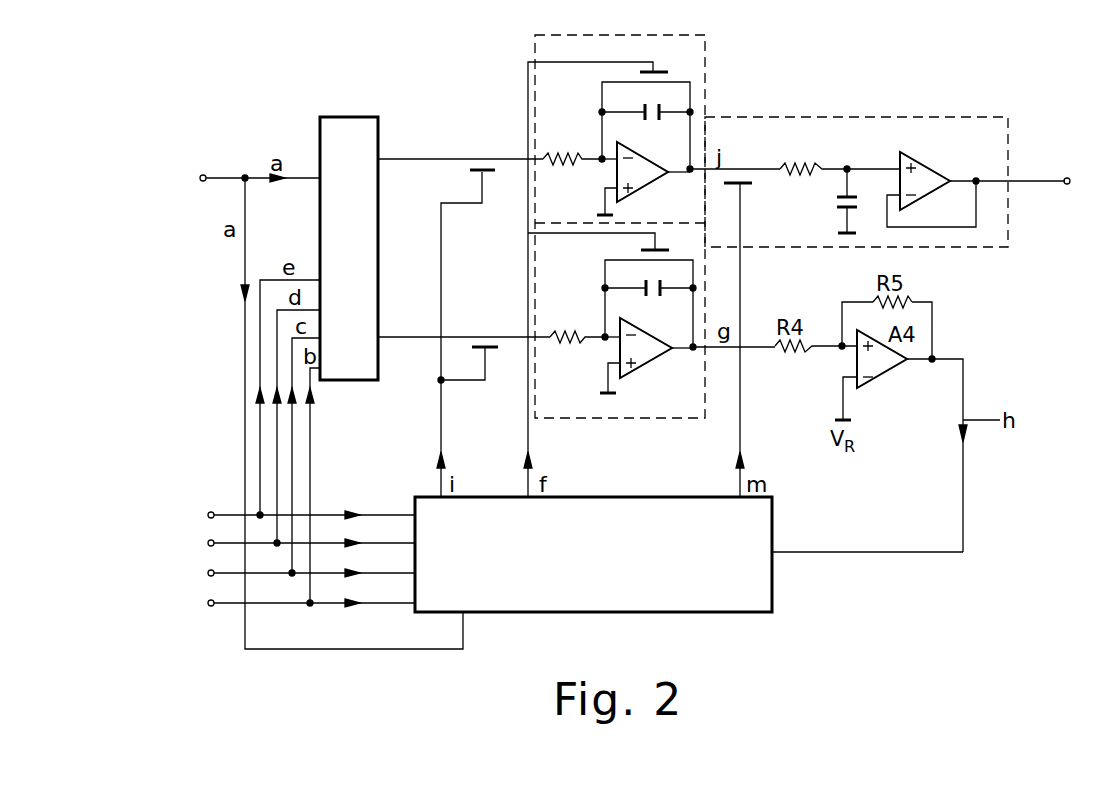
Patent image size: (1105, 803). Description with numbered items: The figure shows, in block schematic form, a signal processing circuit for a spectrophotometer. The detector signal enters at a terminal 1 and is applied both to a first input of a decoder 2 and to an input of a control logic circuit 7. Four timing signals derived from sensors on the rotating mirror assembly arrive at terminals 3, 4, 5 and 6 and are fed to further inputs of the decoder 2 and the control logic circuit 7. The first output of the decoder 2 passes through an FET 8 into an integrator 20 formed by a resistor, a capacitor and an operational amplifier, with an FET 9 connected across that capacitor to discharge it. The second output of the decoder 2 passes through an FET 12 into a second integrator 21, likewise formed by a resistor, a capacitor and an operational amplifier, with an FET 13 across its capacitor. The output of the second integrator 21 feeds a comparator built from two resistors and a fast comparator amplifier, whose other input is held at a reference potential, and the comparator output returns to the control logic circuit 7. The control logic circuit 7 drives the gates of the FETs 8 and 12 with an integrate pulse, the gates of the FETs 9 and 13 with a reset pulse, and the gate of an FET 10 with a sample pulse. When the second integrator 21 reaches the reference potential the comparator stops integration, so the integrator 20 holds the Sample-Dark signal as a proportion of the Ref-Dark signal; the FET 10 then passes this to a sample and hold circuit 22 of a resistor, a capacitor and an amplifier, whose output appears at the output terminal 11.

The terminal 1 is at (251, 177).
The decoder 2 is at (355, 117).
The terminal 3 is at (299, 515).
The terminal 4 is at (299, 543).
The terminal 5 is at (299, 573).
The terminal 6 is at (299, 603).
The control logic circuit 7 is at (772, 592).
The FET 8 is at (482, 168).
The FET 9 is at (660, 70).
The FET 10 is at (743, 168).
The output terminal 11 is at (1084, 181).
The FET 12 is at (485, 345).
The FET 13 is at (641, 248).
The integrator 20 is at (530, 42).
The second integrator 21 is at (657, 420).
The sample and hold circuit 22 is at (946, 117).